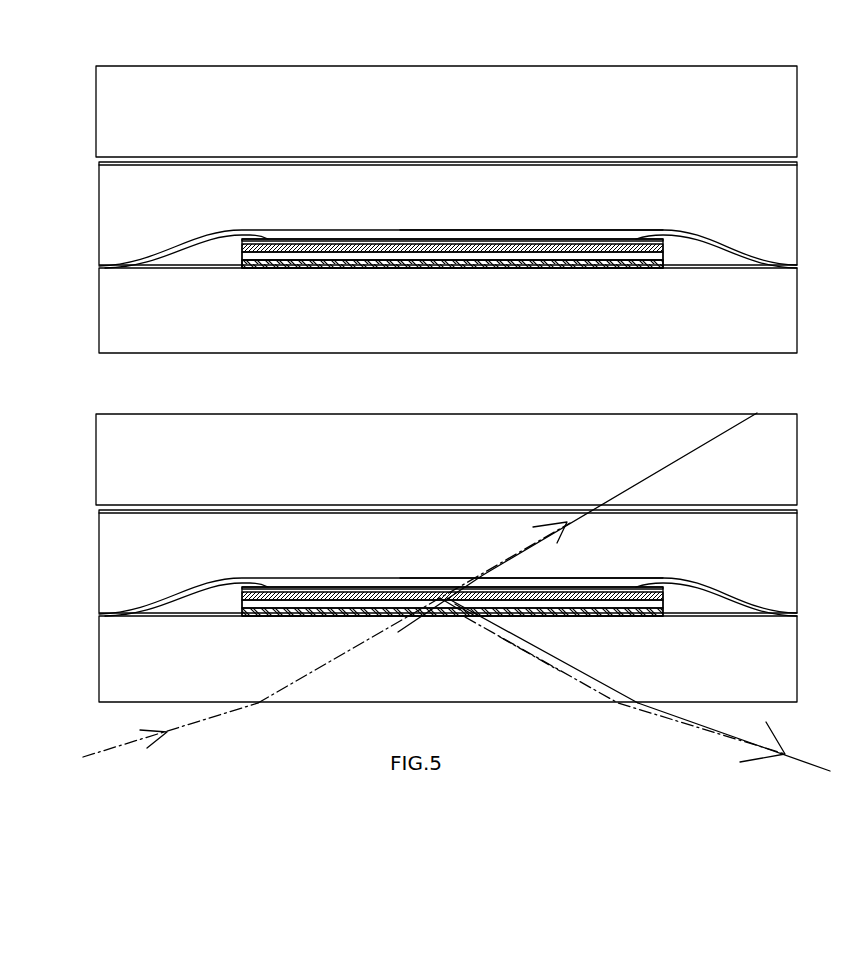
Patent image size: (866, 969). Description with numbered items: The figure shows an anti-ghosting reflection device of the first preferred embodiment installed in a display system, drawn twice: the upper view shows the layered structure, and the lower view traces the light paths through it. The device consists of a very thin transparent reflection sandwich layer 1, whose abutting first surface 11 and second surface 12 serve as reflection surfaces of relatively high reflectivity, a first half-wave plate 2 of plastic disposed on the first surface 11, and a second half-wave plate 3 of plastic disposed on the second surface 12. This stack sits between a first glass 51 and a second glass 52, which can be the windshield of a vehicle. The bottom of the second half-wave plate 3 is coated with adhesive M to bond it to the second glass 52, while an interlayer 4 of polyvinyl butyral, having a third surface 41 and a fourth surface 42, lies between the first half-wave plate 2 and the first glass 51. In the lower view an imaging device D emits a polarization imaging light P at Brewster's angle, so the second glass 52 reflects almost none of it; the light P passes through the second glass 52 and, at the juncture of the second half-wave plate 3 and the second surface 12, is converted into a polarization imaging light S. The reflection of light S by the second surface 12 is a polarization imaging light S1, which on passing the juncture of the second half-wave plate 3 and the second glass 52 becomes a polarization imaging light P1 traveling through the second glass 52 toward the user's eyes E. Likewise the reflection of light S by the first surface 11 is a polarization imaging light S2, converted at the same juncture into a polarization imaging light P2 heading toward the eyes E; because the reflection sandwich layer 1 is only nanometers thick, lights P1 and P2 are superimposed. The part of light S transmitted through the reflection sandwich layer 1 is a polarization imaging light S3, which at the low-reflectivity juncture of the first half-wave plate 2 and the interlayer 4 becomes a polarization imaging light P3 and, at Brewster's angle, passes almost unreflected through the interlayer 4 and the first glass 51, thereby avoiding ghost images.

The first glass 51 is at (785, 118).
The second glass 52 is at (782, 308).
The interlayer 4 is at (783, 222).
The third surface 41 is at (628, 163).
The fourth surface 42 is at (595, 230).
The reflection sandwich layer 1 is at (541, 253).
The first surface 11 is at (625, 251).
The second surface 12 is at (505, 249).
The first half-wave plate 2 is at (470, 241).
The second half-wave plate 3 is at (383, 262).
The adhesive M is at (312, 262).
The imaging device D is at (158, 736).
The polarization imaging light P is at (389, 636).
The polarization imaging light P1 is at (547, 668).
The polarization imaging light P2 is at (557, 658).
The polarization imaging light P3 is at (517, 553).
The polarization imaging light S is at (447, 598).
The polarization imaging light S1 is at (457, 605).
The polarization imaging light S2 is at (468, 613).
The polarization imaging light S3 is at (457, 590).
The user's eyes E is at (740, 742).